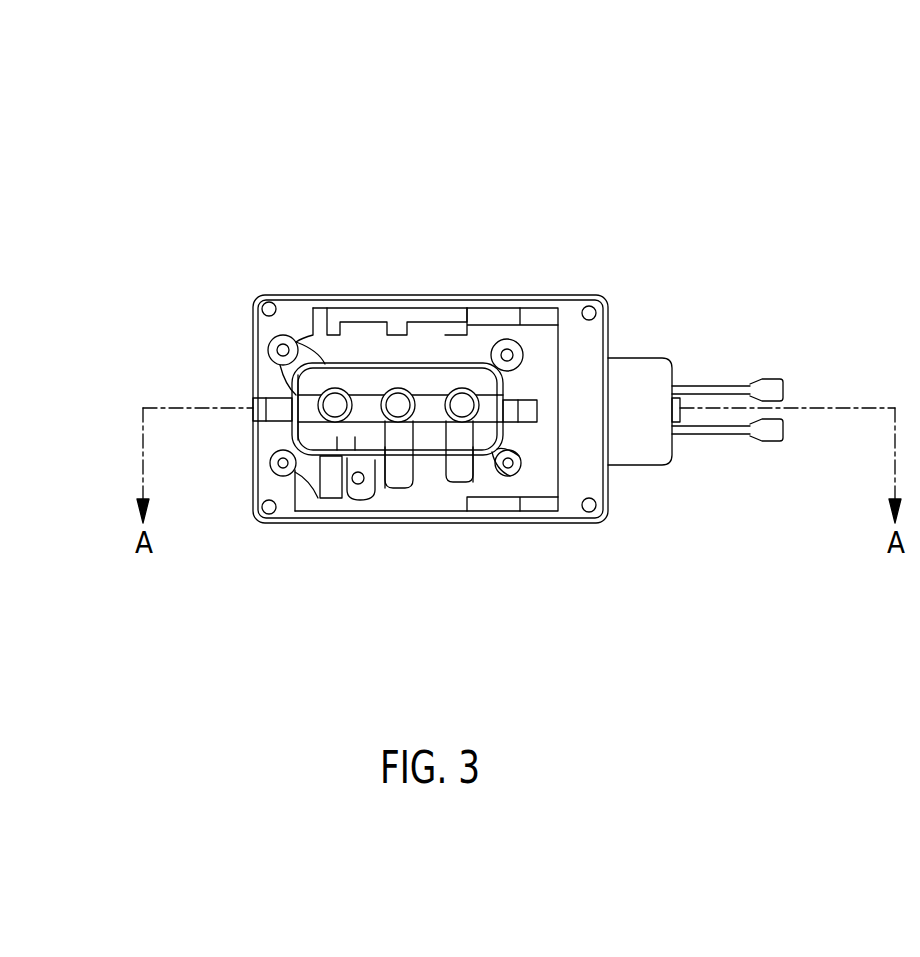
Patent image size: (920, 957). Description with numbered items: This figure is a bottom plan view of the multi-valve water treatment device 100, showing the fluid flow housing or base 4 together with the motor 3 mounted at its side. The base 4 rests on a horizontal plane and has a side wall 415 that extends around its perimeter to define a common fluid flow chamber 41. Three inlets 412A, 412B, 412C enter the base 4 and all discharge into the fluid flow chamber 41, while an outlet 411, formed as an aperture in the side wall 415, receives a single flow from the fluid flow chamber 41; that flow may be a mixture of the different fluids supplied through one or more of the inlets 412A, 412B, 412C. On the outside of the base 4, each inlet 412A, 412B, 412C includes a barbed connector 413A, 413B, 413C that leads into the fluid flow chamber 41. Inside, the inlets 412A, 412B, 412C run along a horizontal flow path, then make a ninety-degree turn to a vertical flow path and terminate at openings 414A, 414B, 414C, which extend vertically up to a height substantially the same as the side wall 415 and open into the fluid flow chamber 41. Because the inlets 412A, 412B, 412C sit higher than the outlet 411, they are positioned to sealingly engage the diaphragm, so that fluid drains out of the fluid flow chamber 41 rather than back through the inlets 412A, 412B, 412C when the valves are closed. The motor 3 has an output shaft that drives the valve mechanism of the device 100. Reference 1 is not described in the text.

The water treatment device 100 is at (329, 101).
The housing 1 is at (297, 317).
The motor 3 is at (637, 368).
The base 4 is at (355, 434).
The fluid flow chamber 41 is at (337, 434).
The outlet 411 is at (512, 424).
The inlet 412A is at (284, 419).
The inlet 412B is at (378, 492).
The inlet 412C is at (470, 492).
The barbed connector 413A is at (253, 406).
The barbed connector 413B is at (363, 466).
The barbed connector 413C is at (473, 480).
The opening 414A is at (335, 405).
The opening 414B is at (398, 405).
The opening 414C is at (462, 405).
The side wall 415 is at (499, 302).